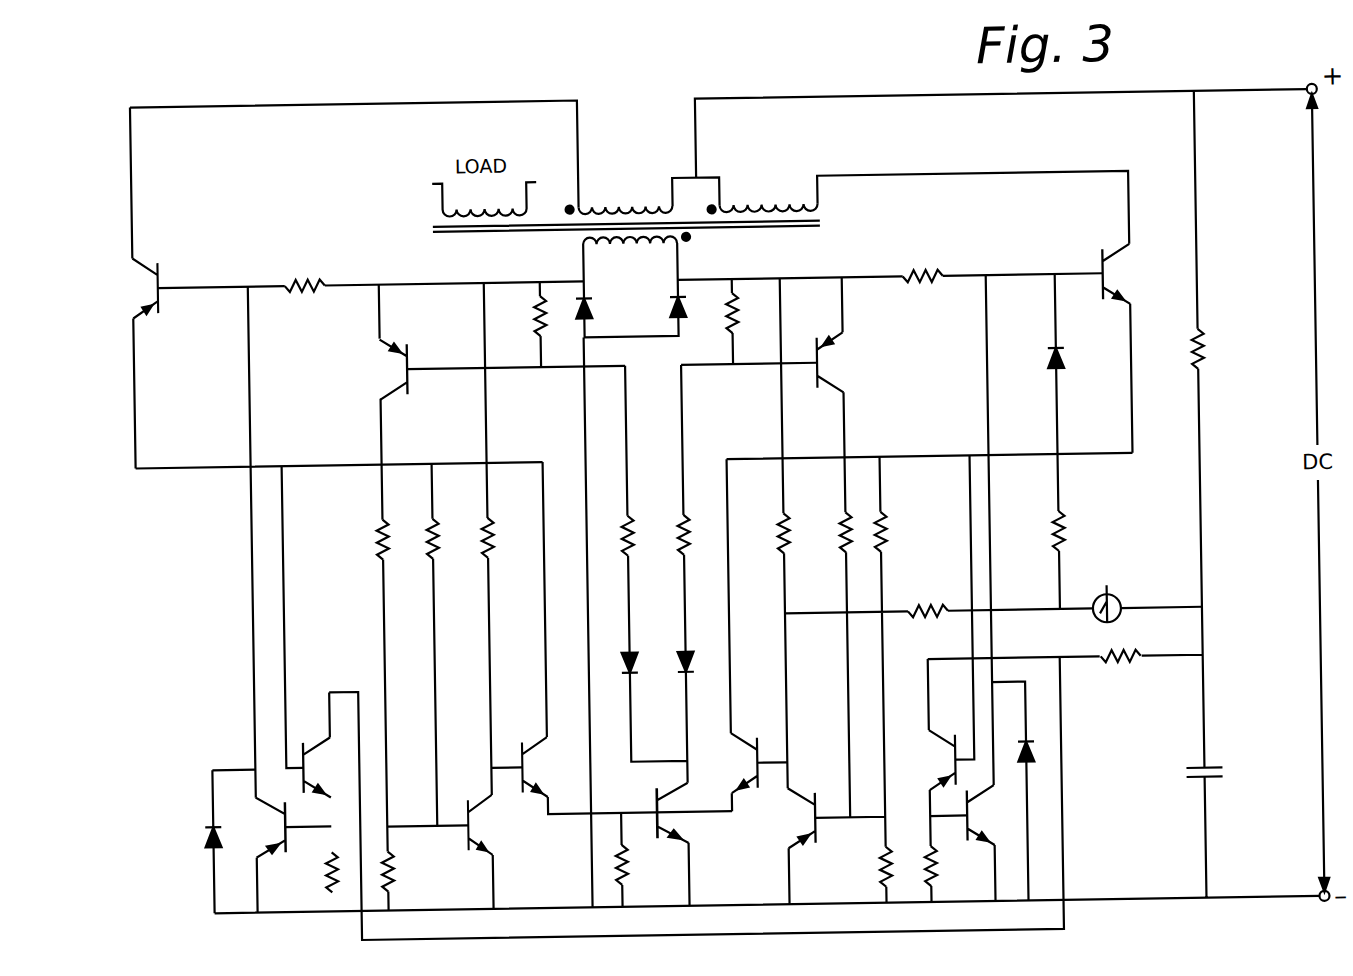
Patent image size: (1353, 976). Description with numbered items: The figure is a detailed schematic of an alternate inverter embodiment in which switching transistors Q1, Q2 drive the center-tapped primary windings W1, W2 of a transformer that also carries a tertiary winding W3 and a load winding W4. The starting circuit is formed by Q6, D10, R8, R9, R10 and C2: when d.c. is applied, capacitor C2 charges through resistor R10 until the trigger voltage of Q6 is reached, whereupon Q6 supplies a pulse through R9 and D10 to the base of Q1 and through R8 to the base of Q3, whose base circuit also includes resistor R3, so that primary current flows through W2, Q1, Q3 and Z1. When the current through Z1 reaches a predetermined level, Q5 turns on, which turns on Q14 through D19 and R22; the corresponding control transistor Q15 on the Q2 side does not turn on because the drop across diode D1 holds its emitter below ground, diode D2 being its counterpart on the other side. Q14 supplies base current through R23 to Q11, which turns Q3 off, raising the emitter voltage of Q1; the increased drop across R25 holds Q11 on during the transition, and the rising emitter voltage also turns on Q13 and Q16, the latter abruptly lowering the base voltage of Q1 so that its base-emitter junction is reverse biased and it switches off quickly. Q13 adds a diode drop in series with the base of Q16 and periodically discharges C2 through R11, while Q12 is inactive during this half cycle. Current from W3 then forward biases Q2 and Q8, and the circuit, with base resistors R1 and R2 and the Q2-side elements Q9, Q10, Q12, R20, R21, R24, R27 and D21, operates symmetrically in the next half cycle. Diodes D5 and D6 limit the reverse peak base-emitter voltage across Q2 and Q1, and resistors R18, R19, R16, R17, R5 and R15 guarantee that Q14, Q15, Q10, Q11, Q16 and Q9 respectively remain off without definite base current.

The switching transistor Q1 is at (1123, 274).
The switching transistor Q2 is at (133, 288).
The control transistor Q3 is at (731, 763).
The current detector transistor Q5 is at (688, 812).
The trigger device Q6 is at (1119, 599).
The control transistor Q8 is at (543, 767).
The control transistor Q9 is at (263, 827).
The control transistor Q10 is at (495, 824).
The control transistor Q11 is at (789, 818).
The control transistor Q12 is at (330, 767).
The control transistor Q13 is at (928, 760).
The control transistor Q14 is at (844, 362).
The control transistor Q15 is at (380, 369).
The control transistor Q16 is at (993, 815).
The resistor R1 is at (304, 270).
The resistor R2 is at (922, 263).
The resistor R3 is at (769, 533).
The resistor R5 is at (947, 865).
The resistor R8 is at (927, 599).
The resistor R9 is at (1074, 530).
The resistor R10 is at (1218, 348).
The resistor R11 is at (1122, 667).
The resistor R15 is at (313, 872).
The resistor R16 is at (407, 871).
The resistor R17 is at (865, 867).
The resistor R18 is at (751, 312).
The resistor R19 is at (520, 316).
The resistor R20 is at (360, 540).
The resistor R21 is at (609, 536).
The resistor R22 is at (664, 535).
The resistor R23 is at (825, 532).
The resistor R24 is at (414, 539).
The resistor R25 is at (901, 532).
The resistor R27 is at (468, 538).
The diode D1 is at (595, 305).
The diode D2 is at (662, 305).
The diode D5 is at (195, 837).
The diode D6 is at (1037, 764).
The diode D10 is at (1076, 356).
The diode D19 is at (703, 671).
The diode D21 is at (614, 653).
The zener diode Z1 is at (636, 864).
The starting capacitor C2 is at (1211, 786).
The primary winding W1 is at (625, 194).
The primary winding W2 is at (768, 194).
The tertiary winding W3 is at (631, 286).
The load winding W4 is at (484, 195).